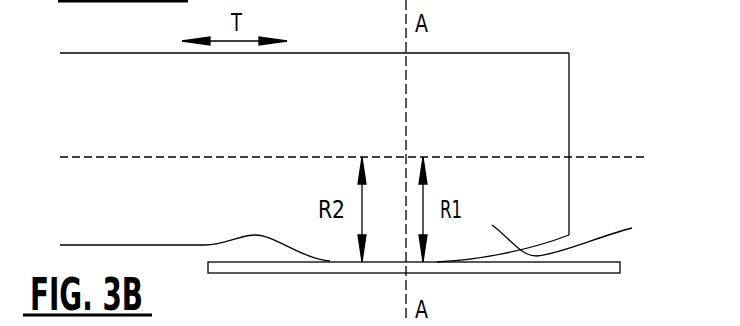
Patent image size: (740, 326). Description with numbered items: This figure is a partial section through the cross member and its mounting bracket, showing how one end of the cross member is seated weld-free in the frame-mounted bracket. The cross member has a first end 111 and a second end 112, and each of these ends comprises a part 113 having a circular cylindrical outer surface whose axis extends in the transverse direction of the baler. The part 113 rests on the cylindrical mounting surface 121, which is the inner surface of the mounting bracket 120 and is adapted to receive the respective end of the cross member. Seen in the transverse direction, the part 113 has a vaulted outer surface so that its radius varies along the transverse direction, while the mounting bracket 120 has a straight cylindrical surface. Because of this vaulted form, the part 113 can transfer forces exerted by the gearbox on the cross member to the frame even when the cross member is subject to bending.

The first end 111 is at (381, 132).
The second end 112 is at (610, 84).
The part having a circular cylindrical outer surface 113 is at (579, 234).
The mounting bracket 120 is at (522, 300).
The cylindrical mounting surface 121 is at (352, 262).